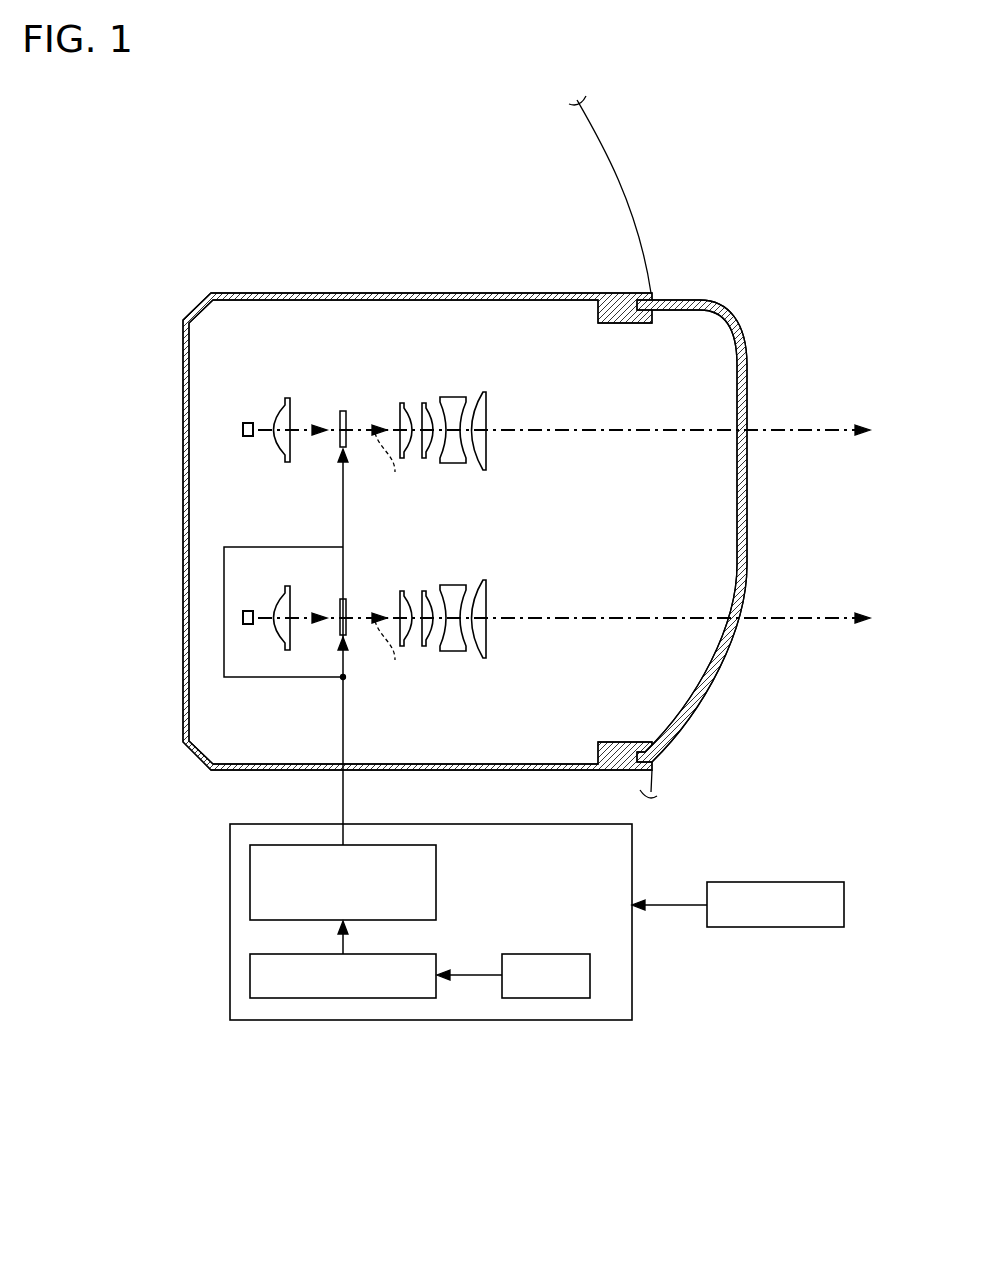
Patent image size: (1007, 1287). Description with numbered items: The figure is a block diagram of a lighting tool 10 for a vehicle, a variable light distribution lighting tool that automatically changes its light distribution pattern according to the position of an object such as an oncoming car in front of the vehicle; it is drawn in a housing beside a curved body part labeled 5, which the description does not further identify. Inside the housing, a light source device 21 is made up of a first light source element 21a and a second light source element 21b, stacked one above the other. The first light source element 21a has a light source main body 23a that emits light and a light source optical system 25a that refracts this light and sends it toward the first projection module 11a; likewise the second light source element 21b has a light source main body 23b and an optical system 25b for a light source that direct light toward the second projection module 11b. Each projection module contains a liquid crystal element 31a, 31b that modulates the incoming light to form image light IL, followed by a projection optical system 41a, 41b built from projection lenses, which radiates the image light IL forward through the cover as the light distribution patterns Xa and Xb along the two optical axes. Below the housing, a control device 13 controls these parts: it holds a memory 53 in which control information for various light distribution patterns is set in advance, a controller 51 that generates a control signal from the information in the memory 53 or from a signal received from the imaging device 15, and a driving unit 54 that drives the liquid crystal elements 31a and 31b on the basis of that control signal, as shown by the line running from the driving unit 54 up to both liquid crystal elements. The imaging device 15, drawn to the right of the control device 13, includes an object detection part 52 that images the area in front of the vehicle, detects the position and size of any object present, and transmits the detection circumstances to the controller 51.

The vehicle body 5 is at (623, 172).
The lighting tool for a vehicle 10 is at (665, 253).
The first projection module 11a is at (501, 342).
The second projection module 11b is at (519, 667).
The control device 13 is at (420, 979).
The imaging device 15 is at (802, 930).
The light source device 21 is at (65, 358).
The first light source element 21a is at (128, 335).
The second light source element 21b is at (128, 557).
The light source main body 23a is at (247, 423).
The light source main body 23b is at (247, 611).
The light source optical system 25a is at (289, 398).
The optical system for a light source 25b is at (289, 586).
The liquid crystal element 31a is at (350, 407).
The liquid crystal element 31b is at (350, 598).
The projection optical system 41a is at (440, 386).
The projection optical system 41b is at (462, 668).
The controller 51 is at (348, 1000).
The object detection part 52 is at (746, 919).
The memory 53 is at (540, 1000).
The driving unit 54 is at (250, 882).
The image light IL is at (391, 562).
The light distribution pattern Xa is at (760, 430).
The light distribution pattern Xb is at (760, 618).